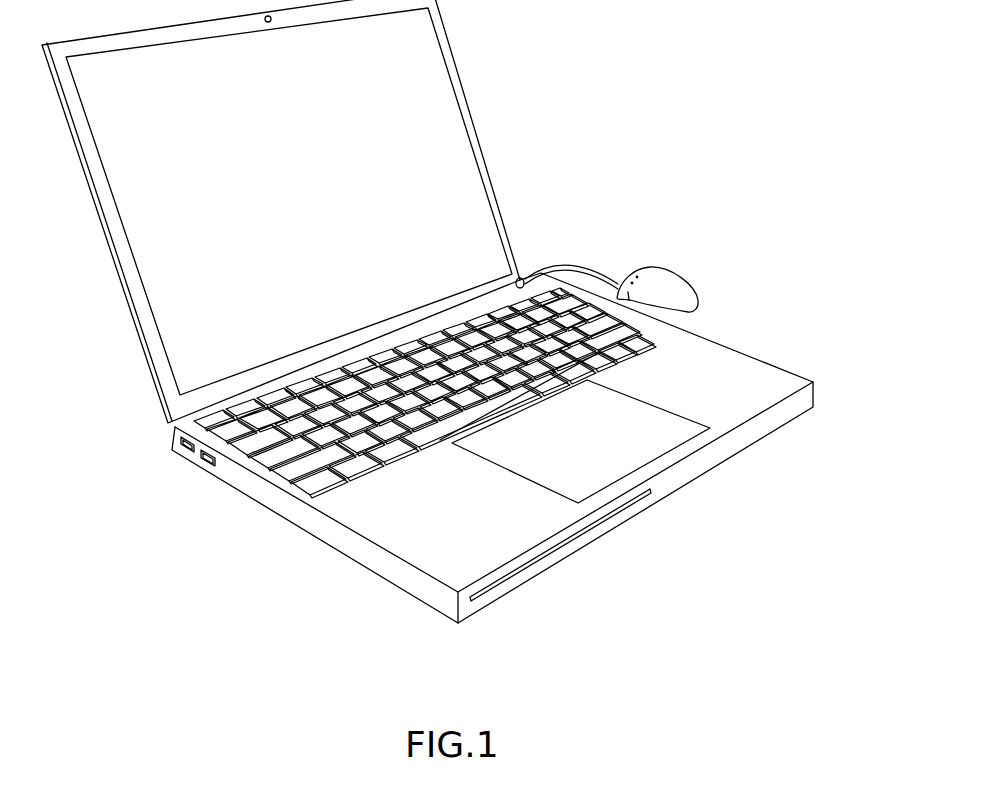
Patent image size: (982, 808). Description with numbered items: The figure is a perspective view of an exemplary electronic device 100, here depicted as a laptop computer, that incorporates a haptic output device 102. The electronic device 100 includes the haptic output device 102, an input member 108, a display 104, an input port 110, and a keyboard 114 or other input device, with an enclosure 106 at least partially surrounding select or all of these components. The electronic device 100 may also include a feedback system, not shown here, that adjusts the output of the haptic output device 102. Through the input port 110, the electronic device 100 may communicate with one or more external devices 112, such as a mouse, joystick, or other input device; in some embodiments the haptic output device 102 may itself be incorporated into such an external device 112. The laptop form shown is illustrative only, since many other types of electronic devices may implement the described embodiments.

The electronic device 100 is at (427, 311).
The haptic output device 102 is at (642, 430).
The display 104 is at (425, 88).
The enclosure 106 is at (715, 373).
The input member 108 is at (523, 275).
The input port 110 is at (200, 462).
The external device 112 is at (665, 273).
The keyboard 114 is at (594, 310).